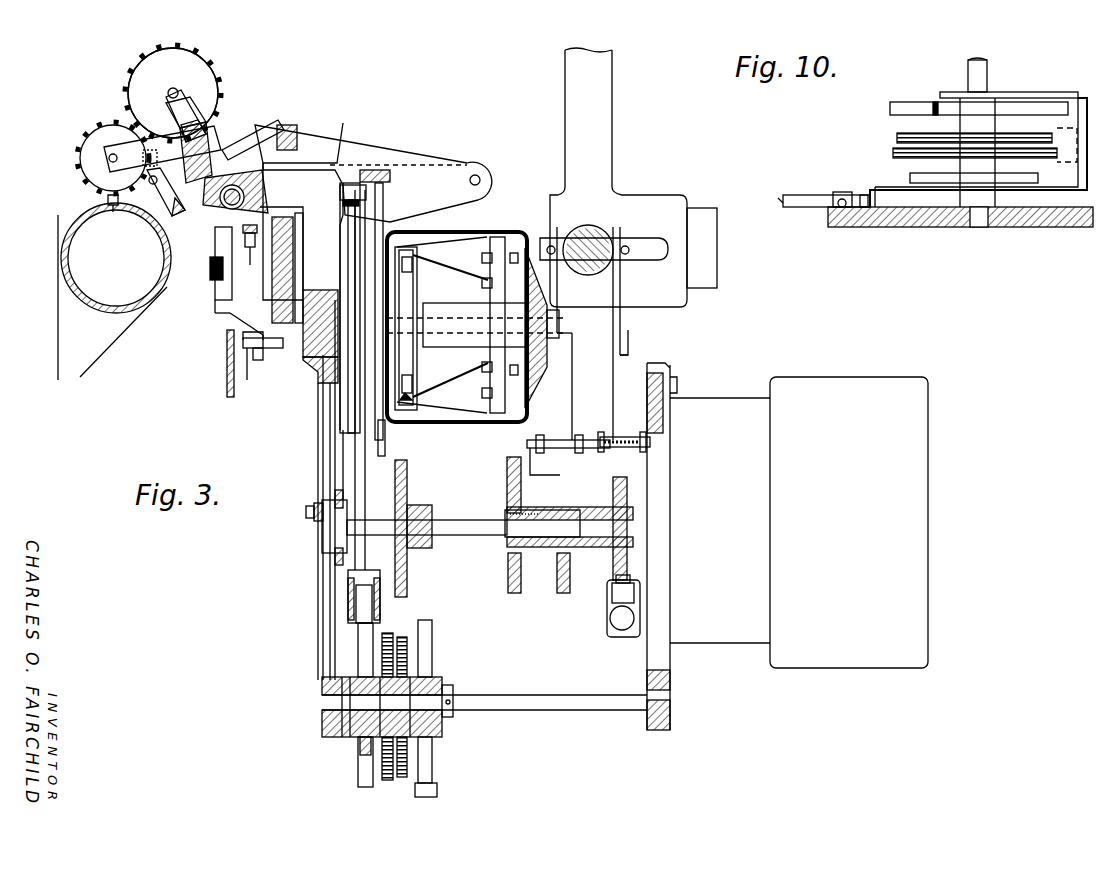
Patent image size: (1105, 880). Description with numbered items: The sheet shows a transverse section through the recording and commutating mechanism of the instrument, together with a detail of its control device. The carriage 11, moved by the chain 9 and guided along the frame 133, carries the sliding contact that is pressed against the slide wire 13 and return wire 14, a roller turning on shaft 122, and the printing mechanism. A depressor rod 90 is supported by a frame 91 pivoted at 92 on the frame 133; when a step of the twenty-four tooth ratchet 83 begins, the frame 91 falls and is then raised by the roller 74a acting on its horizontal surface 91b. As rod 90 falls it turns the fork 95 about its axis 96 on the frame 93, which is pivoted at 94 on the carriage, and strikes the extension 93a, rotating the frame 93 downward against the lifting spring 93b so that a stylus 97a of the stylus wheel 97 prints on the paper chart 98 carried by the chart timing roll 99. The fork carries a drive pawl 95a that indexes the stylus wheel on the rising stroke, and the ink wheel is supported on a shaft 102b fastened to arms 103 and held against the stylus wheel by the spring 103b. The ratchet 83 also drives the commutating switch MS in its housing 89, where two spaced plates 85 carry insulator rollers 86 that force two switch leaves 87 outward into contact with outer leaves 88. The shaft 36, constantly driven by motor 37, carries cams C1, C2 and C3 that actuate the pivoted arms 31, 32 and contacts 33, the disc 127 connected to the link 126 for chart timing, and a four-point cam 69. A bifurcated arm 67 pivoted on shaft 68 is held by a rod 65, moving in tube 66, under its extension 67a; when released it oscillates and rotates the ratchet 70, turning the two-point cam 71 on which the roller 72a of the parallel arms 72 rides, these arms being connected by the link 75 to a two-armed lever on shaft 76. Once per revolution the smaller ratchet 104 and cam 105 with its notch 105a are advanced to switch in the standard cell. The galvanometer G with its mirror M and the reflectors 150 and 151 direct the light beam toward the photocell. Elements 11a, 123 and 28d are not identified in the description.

In FIG. 3, the arms 103 is at (179, 89).
In FIG. 3, the shaft 102b is at (150, 64).
In FIG. 3, the spring 103b is at (200, 124).
In FIG. 3, the stylus wheel 97 is at (88, 136).
In FIG. 3, the stylus 97a is at (108, 198).
In FIG. 3, the drive pawl 95a is at (118, 142).
In FIG. 3, the axis 96 is at (143, 158).
In FIG. 3, the fork 95 is at (162, 196).
In FIG. 3, the depressor rod 90 is at (203, 200).
In FIG. 3, the frame 93 is at (240, 168).
In FIG. 3, the spring 93b is at (266, 124).
In FIG. 3, the pivot shaft 94 is at (290, 120).
In FIG. 3, the chart timing roll 99 is at (61, 258).
In FIG. 3, the paper chart 98 is at (58, 314).
In FIG. 3, the extension 93a is at (210, 270).
In FIG. 3, the chain 9 is at (250, 250).
In FIG. 3, the plate extension 11a is at (240, 306).
In FIG. 3, the carriage 11 is at (243, 318).
In FIG. 3, the plate 123 is at (227, 366).
In FIG. 3, the shaft 122 is at (248, 372).
In FIG. 3, the slide wire 13 is at (293, 236).
In FIG. 3, the return wire 14 is at (300, 284).
In FIG. 3, the shaft 76 is at (316, 362).
In FIG. 3, the frame 133 is at (318, 375).
In FIG. 3, the frame 91 is at (300, 128).
In FIG. 3, the pivot 92 is at (478, 174).
In FIG. 3, the horizontal surface 91b is at (350, 183).
In FIG. 3, the roller 74a is at (343, 198).
In FIG. 3, the commutating switch MS is at (444, 240).
In FIG. 3, the outer switch leaves 88 is at (462, 240).
In FIG. 3, the switch leaves 87 is at (460, 272).
In FIG. 3, the insulator rollers 86 is at (413, 268).
In FIG. 3, the spaced plates 85 is at (414, 380).
In FIG. 3, the housing 89 is at (515, 232).
In FIG. 3, the ratchet 83 is at (386, 440).
In FIG. 3, the galvanometer G is at (600, 205).
In FIG. 3, the mirror M is at (606, 240).
In FIG. 3, the reflector 151 is at (573, 320).
In FIG. 3, the reflector 150 is at (630, 332).
In FIG. 3, the motor 37 is at (822, 377).
In FIG. 3, the pivoted arm 32 is at (548, 442).
In FIG. 3, the pivoted arm 31 is at (616, 440).
In FIG. 3, the shaft 36 is at (472, 520).
In FIG. 3, the cam 69 is at (408, 577).
In FIG. 10, the cam 69 is at (1072, 125).
In FIG. 3, the cam C3 is at (514, 594).
In FIG. 3, the cam C2 is at (562, 594).
In FIG. 3, the cam C1 is at (612, 570).
In FIG. 3, the contacts 33 is at (618, 628).
In FIG. 3, the disc 127 is at (328, 502).
In FIG. 3, the link 126 is at (316, 518).
In FIG. 3, the parallel arms 72 is at (348, 594).
In FIG. 3, the roller 72a is at (357, 608).
In FIG. 3, the cam 71 is at (364, 777).
In FIG. 10, the cam 71 is at (910, 178).
In FIG. 3, the shaft 68 is at (553, 695).
In FIG. 10, the shaft 68 is at (982, 228).
In FIG. 3, the ratchet 70 is at (388, 782).
In FIG. 10, the ratchet 70 is at (893, 154).
In FIG. 3, the ratchet 104 is at (403, 780).
In FIG. 10, the ratchet 104 is at (897, 140).
In FIG. 3, the cam 105 is at (433, 770).
In FIG. 10, the cam 105 is at (890, 108).
In FIG. 3, the foot 28d is at (437, 792).
In FIG. 3, the link 75 is at (345, 452).
In FIG. 10, the bifurcated arm 67 is at (1050, 92).
In FIG. 10, the notch 105a is at (935, 102).
In FIG. 10, the rod 65 is at (781, 198).
In FIG. 10, the tube 66 is at (814, 196).
In FIG. 10, the extension 67a is at (890, 210).